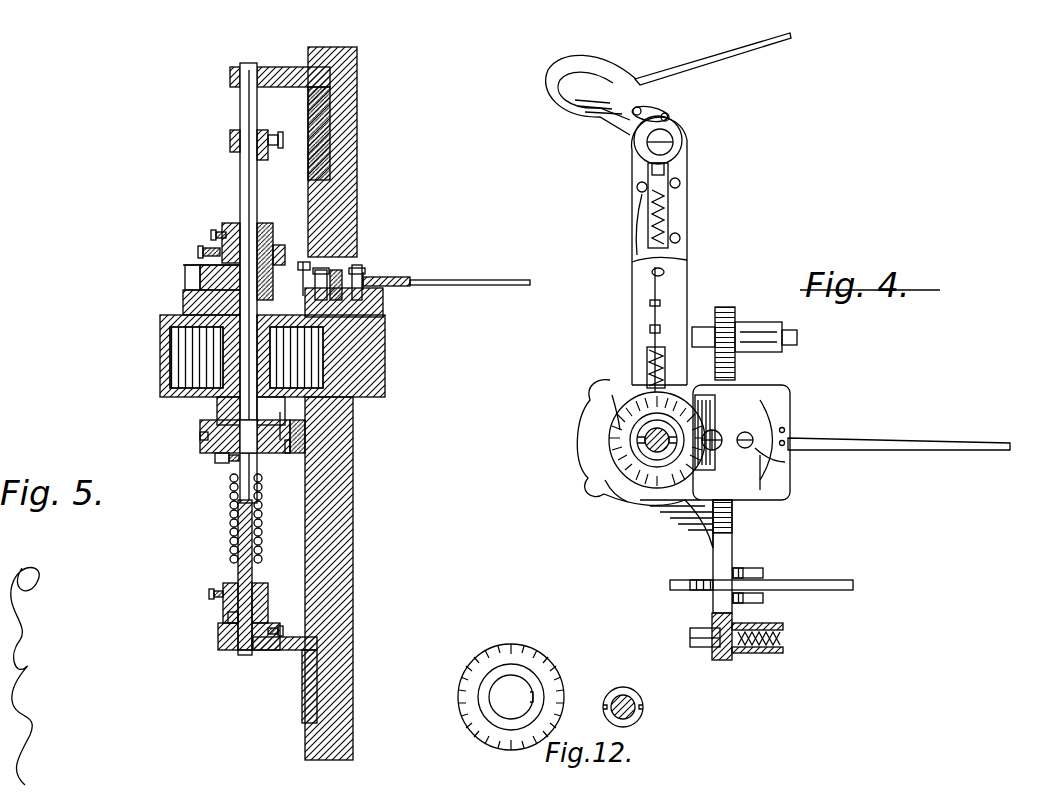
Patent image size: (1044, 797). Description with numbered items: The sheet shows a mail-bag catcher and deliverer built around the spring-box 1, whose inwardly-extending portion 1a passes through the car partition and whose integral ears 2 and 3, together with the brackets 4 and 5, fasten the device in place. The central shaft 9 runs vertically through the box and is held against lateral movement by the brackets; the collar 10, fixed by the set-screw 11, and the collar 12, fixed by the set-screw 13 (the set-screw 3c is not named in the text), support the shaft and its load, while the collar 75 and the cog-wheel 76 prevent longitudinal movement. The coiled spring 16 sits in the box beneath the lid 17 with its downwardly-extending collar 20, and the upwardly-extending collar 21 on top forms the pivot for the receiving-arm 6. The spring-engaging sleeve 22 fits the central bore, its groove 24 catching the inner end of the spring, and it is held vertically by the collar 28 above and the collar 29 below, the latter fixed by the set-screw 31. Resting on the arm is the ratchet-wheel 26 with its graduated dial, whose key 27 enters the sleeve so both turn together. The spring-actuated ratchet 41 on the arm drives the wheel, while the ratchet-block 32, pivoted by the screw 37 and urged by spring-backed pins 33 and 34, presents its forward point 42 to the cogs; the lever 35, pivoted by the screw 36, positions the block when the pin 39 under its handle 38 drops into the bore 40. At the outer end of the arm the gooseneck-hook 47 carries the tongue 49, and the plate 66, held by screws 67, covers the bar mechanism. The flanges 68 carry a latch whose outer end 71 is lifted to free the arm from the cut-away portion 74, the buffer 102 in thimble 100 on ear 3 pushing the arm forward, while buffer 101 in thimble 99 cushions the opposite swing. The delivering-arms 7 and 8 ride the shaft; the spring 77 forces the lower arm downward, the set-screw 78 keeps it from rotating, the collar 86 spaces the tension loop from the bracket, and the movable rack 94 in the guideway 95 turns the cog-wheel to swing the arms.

In FIG. 5, the spring-box 1 is at (160, 368).
In FIG. 4, the spring-box 1 is at (634, 464).
In FIG. 5, the inwardly-extending portion 1a is at (378, 360).
In FIG. 4, the ear 2 is at (728, 318).
In FIG. 4, the ear 3 is at (734, 556).
In FIG. 5, the screw 3c is at (198, 252).
In FIG. 5, the bracket 4 is at (280, 68).
In FIG. 5, the bracket 5 is at (280, 652).
In FIG. 5, the receiving-arm 6 is at (185, 300).
In FIG. 4, the receiving-arm 6 is at (684, 272).
In FIG. 5, the delivering-arm 7 is at (223, 600).
In FIG. 5, the delivering-arm 8 is at (232, 141).
In FIG. 5, the central shaft 9 is at (245, 113).
In FIG. 4, the central shaft 9 is at (650, 440).
In FIG. 5, the collar 10 is at (218, 634).
In FIG. 4, the collar 10 is at (700, 582).
In FIG. 5, the set-screw 11 is at (272, 612).
In FIG. 5, the collar 12 is at (268, 228).
In FIG. 4, the collar 12 is at (645, 455).
In FIG. 5, the set-screw 13 is at (210, 235).
In FIG. 5, the coiled spring 16 is at (384, 305).
In FIG. 4, the coiled spring 16 is at (741, 452).
In FIG. 5, the lid 17 is at (210, 412).
In FIG. 5, the downwardly-extending collar 20 is at (200, 410).
In FIG. 5, the upwardly-extending collar 21 is at (190, 278).
In FIG. 5, the spring-engaging sleeve 22 is at (185, 290).
In FIG. 12, the spring-engaging sleeve 22 is at (636, 698).
In FIG. 12, the longitudinal groove 24 is at (604, 706).
In FIG. 5, the ratchet-wheel 26 is at (185, 270).
In FIG. 4, the ratchet-wheel 26 is at (610, 430).
In FIG. 12, the tongue or integral key 27 is at (530, 697).
In FIG. 5, the collar 28 is at (280, 250).
In FIG. 4, the collar 28 is at (650, 455).
In FIG. 5, the collar 29 is at (280, 403).
In FIG. 5, the set-screw 31 is at (205, 437).
In FIG. 5, the ratchet-block 32 is at (322, 270).
In FIG. 4, the ratchet-block 32 is at (720, 430).
In FIG. 4, the pin 33 is at (788, 490).
In FIG. 5, the pin 34 is at (360, 270).
In FIG. 4, the pin 34 is at (752, 432).
In FIG. 4, the lever 35 is at (788, 425).
In FIG. 4, the screw 36 is at (760, 460).
In FIG. 5, the screw 37 is at (338, 270).
In FIG. 4, the screw 37 is at (680, 485).
In FIG. 5, the handle 38 is at (482, 283).
In FIG. 4, the handle 38 is at (900, 452).
In FIG. 5, the downwardly-extending pin 39 is at (375, 282).
In FIG. 4, the downwardly-extending pin 39 is at (790, 440).
In FIG. 4, the bore 40 is at (790, 420).
In FIG. 4, the spring-actuated ratchet 41 is at (652, 338).
In FIG. 4, the forward point 42 is at (700, 395).
In FIG. 4, the gooseneck-hook 47 is at (712, 58).
In FIG. 4, the tongue 49 is at (622, 84).
In FIG. 4, the plate 66 is at (670, 212).
In FIG. 4, the screw 67 is at (681, 183).
In FIG. 4, the flange 68 is at (755, 572).
In FIG. 4, the outer end of latch 71 is at (836, 575).
In FIG. 5, the cut-away portion 74 is at (240, 652).
In FIG. 5, the collar 75 is at (225, 224).
In FIG. 5, the cog-wheel 76 is at (225, 457).
In FIG. 5, the spring 77 is at (230, 515).
In FIG. 5, the set-screw 78 is at (210, 594).
In FIG. 5, the collar 86 is at (225, 612).
In FIG. 5, the movable rack 94 is at (305, 440).
In FIG. 5, the guideway 95 is at (300, 448).
In FIG. 4, the thimble 99 is at (775, 322).
In FIG. 4, the thimble 100 is at (783, 655).
In FIG. 4, the buffer 101 is at (702, 328).
In FIG. 4, the buffer 102 is at (692, 636).